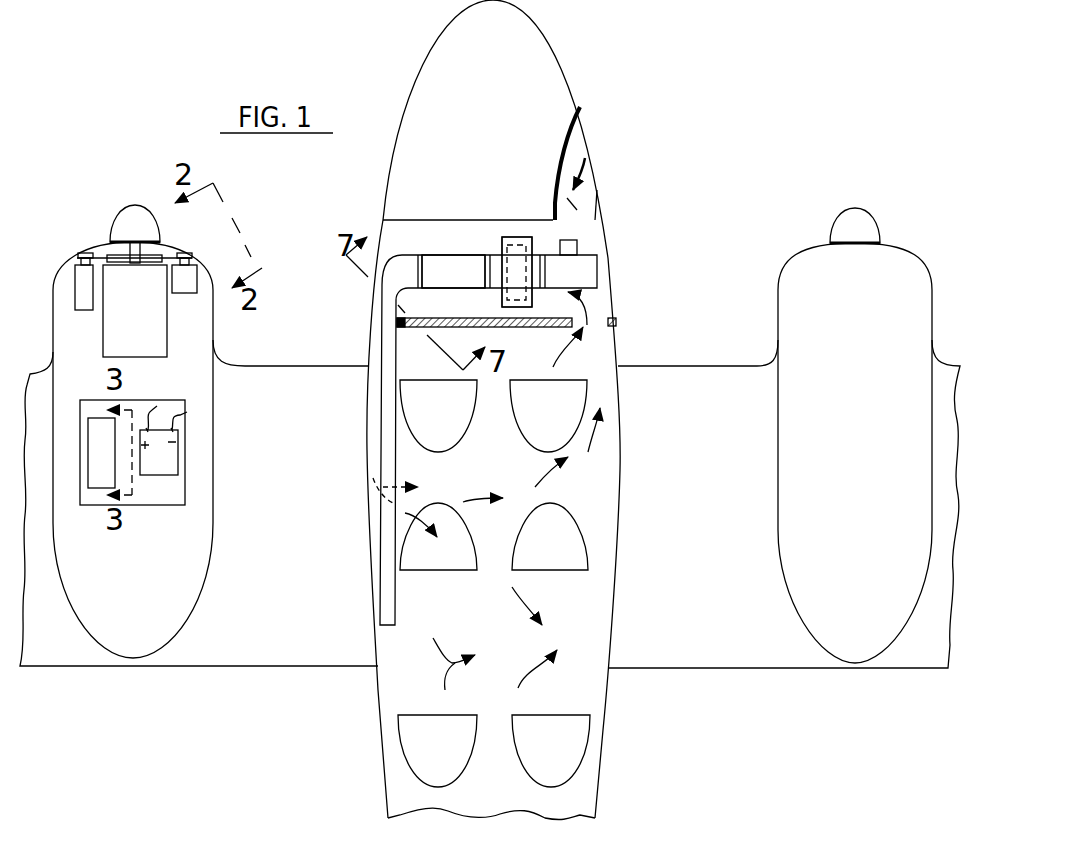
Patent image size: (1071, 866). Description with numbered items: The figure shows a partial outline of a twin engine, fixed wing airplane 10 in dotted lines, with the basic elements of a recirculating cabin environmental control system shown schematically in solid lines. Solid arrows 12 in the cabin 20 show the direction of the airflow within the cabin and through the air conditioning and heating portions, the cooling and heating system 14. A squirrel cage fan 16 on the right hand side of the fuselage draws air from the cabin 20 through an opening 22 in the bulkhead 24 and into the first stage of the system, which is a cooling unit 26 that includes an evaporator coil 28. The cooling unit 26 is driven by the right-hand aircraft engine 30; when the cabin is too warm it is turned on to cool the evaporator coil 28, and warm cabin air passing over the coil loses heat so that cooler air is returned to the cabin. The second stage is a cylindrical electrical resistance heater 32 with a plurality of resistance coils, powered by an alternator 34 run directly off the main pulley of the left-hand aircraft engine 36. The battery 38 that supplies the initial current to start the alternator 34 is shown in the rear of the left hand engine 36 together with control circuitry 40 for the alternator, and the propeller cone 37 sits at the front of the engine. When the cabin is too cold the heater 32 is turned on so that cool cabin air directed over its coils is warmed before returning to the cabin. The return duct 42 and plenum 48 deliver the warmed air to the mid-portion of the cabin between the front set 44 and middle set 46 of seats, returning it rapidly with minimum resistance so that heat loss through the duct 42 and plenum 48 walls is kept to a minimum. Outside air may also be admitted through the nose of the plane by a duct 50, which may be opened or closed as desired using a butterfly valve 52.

The airplane 10 is at (365, 78).
The solid arrows 12 is at (501, 490).
The cooling and heating system 14 is at (457, 247).
The squirrel cage fan 16 is at (581, 264).
The cabin 20 is at (591, 604).
The opening 22 is at (596, 327).
The bulkhead 24 is at (440, 314).
The cooling unit 26 is at (506, 243).
The evaporator coil 28 is at (667, 188).
The right-hand aircraft engine 30 is at (866, 392).
The electrical resistance heater 32 is at (450, 266).
The alternator 34 is at (186, 268).
The left-hand aircraft engine 36 is at (154, 323).
The propeller cone 37 is at (128, 222).
The battery 38 is at (170, 454).
The control circuitry 40 is at (104, 470).
The return duct 42 is at (398, 264).
The front set of seats 44 is at (538, 431).
The middle set of seats 46 is at (545, 537).
The plenum 48 is at (380, 478).
The duct 50 is at (583, 138).
The butterfly valve 52 is at (578, 214).